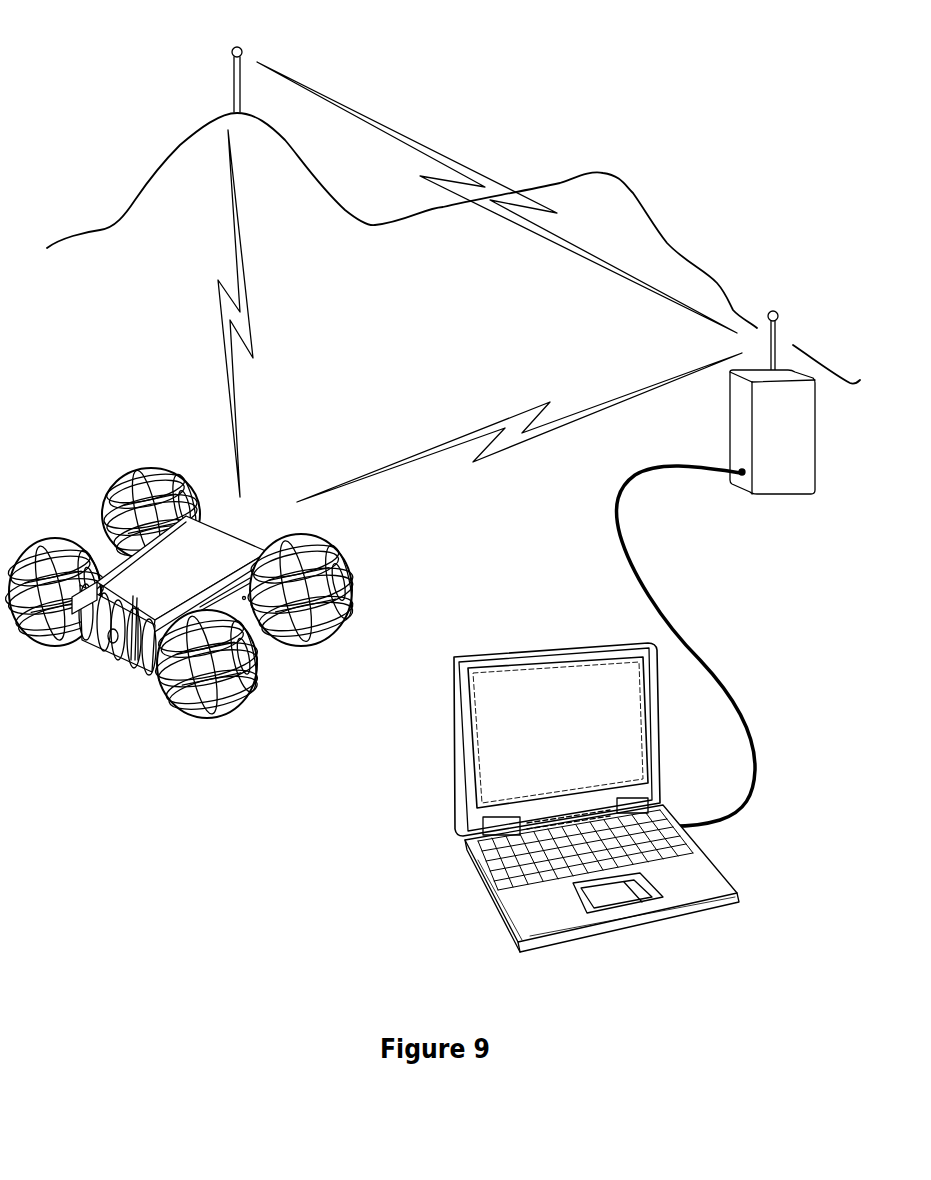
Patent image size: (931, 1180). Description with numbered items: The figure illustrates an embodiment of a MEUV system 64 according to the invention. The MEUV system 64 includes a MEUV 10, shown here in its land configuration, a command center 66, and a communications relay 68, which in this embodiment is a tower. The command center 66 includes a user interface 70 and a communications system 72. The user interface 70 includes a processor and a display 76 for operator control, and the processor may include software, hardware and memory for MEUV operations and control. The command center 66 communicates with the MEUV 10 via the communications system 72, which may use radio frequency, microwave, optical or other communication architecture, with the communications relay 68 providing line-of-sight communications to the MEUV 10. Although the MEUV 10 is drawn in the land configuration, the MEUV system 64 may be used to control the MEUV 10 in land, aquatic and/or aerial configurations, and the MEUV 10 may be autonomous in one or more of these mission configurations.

The MEUV 10 is at (148, 468).
The MEUV system 64 is at (493, 93).
The command center 66 is at (586, 801).
The communications relay 68 is at (232, 50).
The user interface 70 is at (712, 868).
The communications system 72 is at (733, 438).
The display 76 is at (478, 728).